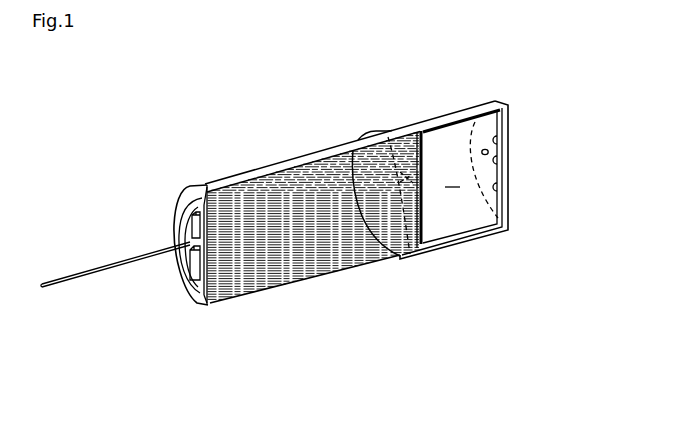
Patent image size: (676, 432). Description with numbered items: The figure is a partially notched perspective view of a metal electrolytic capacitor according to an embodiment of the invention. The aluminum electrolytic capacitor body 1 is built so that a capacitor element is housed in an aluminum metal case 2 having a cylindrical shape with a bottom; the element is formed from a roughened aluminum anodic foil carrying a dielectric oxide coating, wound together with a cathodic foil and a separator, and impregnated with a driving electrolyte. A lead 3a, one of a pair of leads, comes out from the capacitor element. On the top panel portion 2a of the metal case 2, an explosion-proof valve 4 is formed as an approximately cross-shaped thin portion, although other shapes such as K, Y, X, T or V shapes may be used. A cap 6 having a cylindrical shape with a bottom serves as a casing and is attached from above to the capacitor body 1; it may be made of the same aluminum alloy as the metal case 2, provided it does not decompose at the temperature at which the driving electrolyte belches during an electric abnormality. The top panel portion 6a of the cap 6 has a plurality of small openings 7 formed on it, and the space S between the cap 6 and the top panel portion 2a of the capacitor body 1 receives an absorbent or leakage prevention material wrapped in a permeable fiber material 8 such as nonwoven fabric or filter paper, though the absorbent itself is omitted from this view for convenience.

The aluminum electrolytic capacitor body 1 is at (312, 262).
The metal case 2 is at (245, 178).
The top panel portion 2a is at (410, 258).
The lead 3a is at (132, 258).
The explosion-proof valve 4 is at (403, 140).
The cap 6 is at (443, 248).
The top panel portion 6a is at (493, 130).
The small openings 7 is at (505, 150).
The permeable fiber material 8 is at (443, 122).